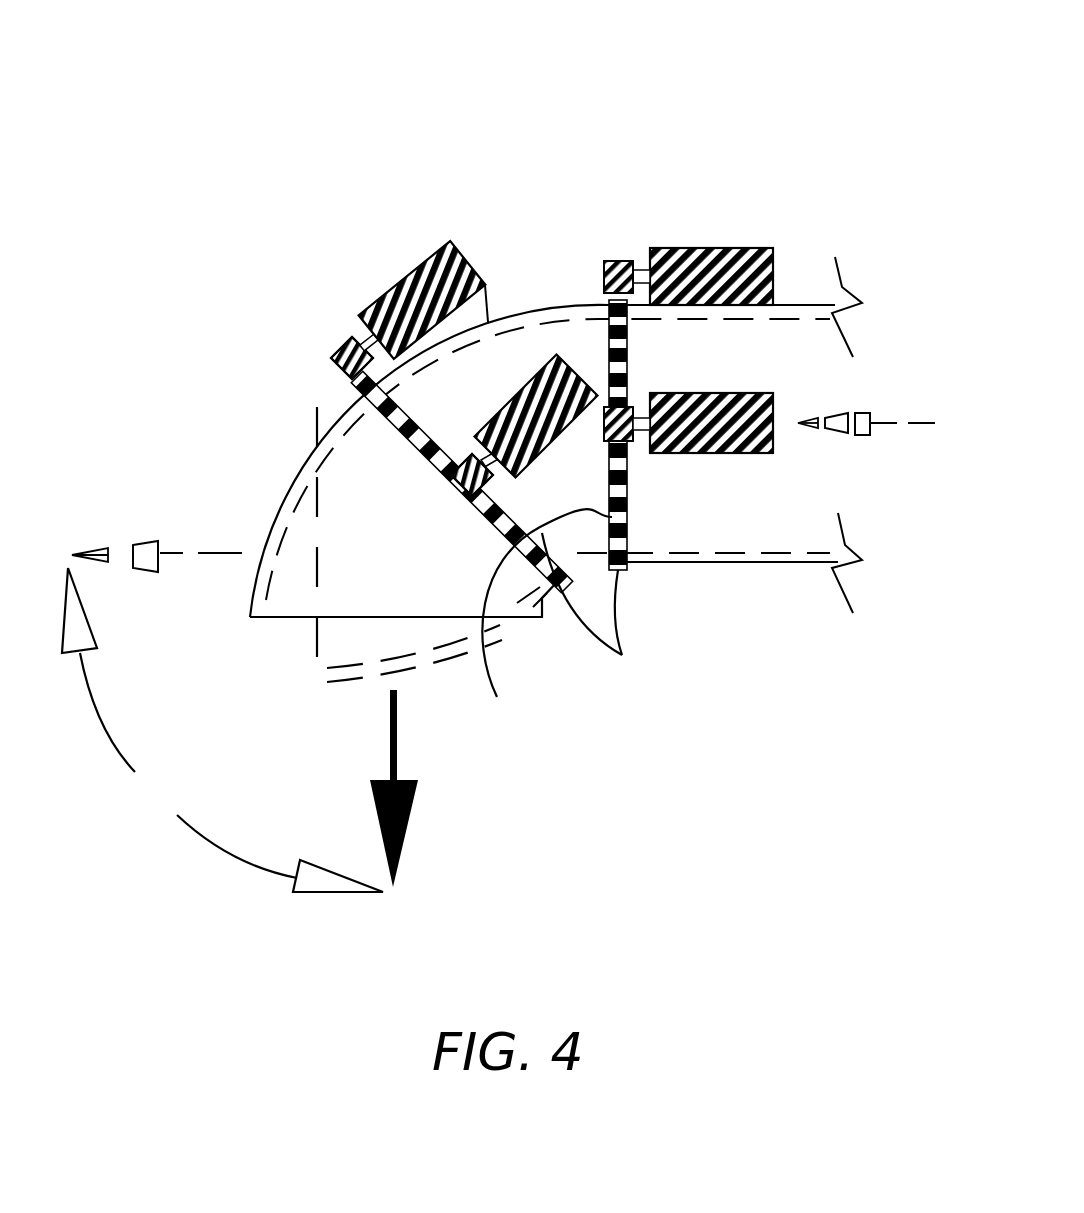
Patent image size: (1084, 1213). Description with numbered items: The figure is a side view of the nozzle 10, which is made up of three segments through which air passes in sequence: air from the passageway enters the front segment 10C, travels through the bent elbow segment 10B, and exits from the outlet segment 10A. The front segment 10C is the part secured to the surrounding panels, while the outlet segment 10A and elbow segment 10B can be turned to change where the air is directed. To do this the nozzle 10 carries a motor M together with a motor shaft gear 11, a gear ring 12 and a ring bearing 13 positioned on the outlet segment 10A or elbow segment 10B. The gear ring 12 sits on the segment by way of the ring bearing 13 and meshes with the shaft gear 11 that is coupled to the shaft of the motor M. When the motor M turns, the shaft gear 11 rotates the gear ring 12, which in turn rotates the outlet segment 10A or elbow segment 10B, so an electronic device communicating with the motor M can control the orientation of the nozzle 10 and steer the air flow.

The nozzle 10 is at (461, 137).
The outlet segment 10A is at (400, 536).
The elbow segment 10B is at (507, 373).
The front segment 10C is at (687, 483).
The motor shaft gear 11 is at (617, 260).
The gear ring 12 is at (598, 615).
The ring bearing 13 is at (547, 621).
The motor M is at (396, 288).